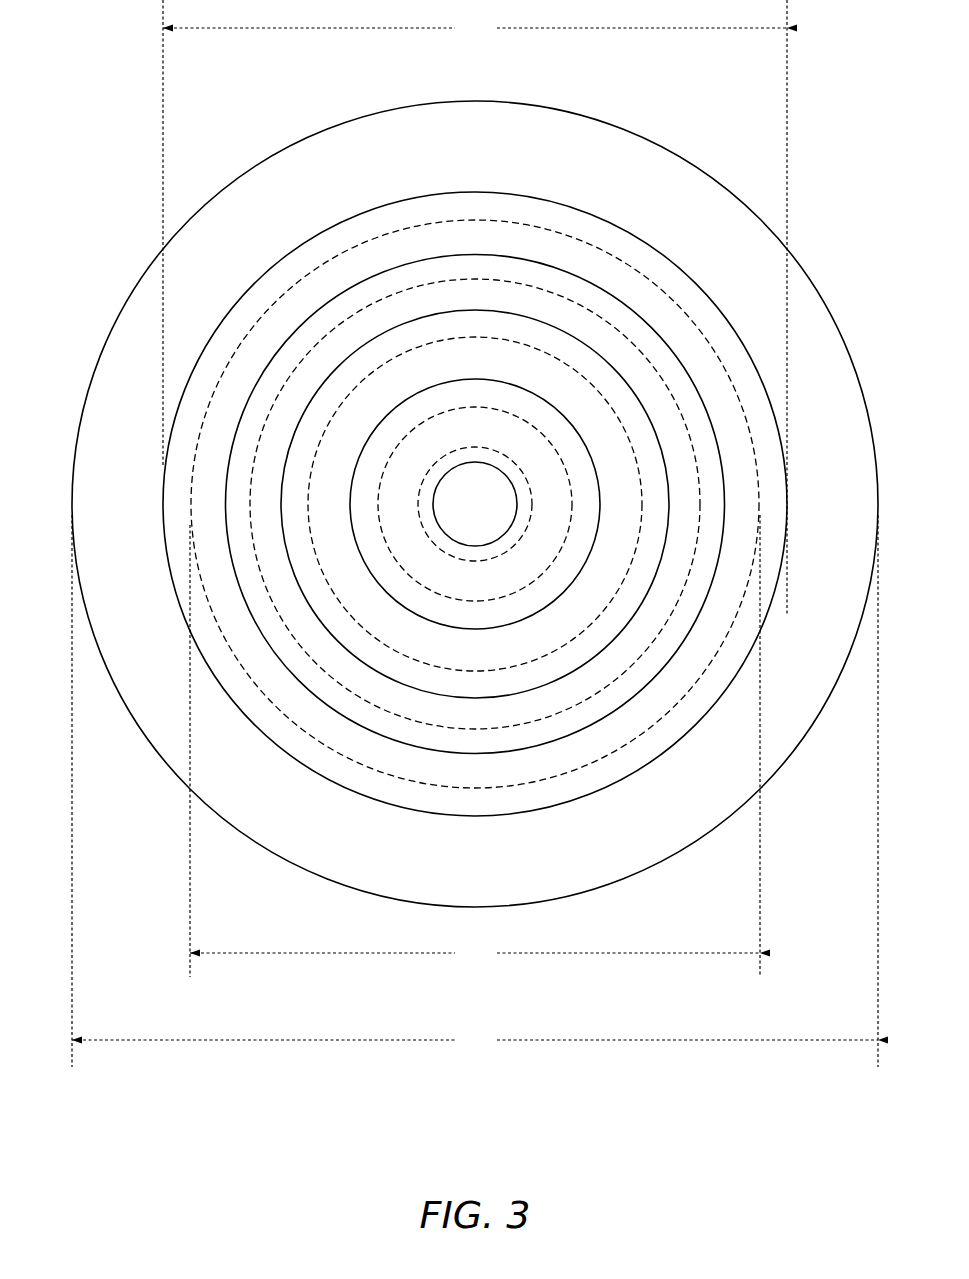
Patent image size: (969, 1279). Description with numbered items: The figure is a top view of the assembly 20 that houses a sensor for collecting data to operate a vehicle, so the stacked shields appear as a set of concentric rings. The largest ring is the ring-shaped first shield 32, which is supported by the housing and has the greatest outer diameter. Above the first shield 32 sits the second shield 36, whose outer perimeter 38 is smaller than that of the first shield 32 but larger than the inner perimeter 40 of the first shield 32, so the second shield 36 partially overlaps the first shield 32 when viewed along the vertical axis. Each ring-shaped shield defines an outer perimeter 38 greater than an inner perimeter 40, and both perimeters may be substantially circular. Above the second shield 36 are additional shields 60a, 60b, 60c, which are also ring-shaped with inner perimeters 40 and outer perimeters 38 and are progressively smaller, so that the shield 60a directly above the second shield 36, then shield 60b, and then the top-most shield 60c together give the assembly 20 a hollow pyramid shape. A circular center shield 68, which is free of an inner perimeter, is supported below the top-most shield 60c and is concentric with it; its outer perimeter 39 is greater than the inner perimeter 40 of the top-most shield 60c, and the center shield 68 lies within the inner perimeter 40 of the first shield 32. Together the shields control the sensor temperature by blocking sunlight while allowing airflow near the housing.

The assembly 20 is at (836, 143).
The first shield 32 is at (124, 358).
The second shield 36 is at (295, 735).
The outer perimeter 38 is at (485, 378).
The outer perimeter of center shield 39 is at (417, 502).
The inner perimeter 40 is at (567, 473).
The center shield 68 is at (493, 493).
The additional shield 60a is at (687, 605).
The additional shield 60b is at (645, 545).
The additional shield 60c is at (587, 503).